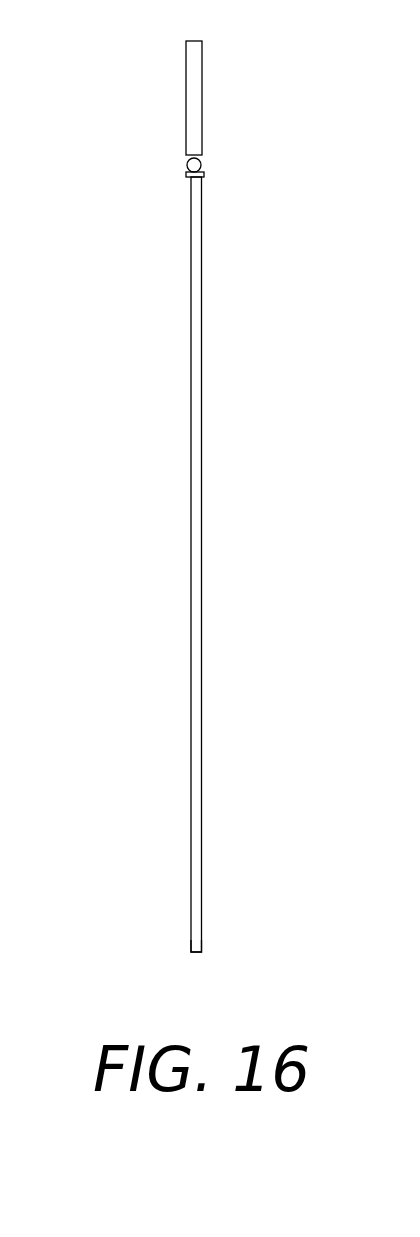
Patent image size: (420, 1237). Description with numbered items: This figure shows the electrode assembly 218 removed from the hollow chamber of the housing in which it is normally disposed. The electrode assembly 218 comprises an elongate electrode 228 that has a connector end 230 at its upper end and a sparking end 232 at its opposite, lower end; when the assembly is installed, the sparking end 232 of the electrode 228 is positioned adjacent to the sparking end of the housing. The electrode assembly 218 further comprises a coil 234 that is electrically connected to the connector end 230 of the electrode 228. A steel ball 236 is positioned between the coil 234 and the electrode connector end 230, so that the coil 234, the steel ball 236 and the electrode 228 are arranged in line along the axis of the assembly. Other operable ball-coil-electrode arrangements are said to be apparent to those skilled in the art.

The electrode assembly 218 is at (146, 481).
The electrode 228 is at (202, 452).
The connector end 230 is at (187, 188).
The sparking end 232 is at (202, 952).
The coil 234 is at (186, 78).
The steel ball 236 is at (187, 165).